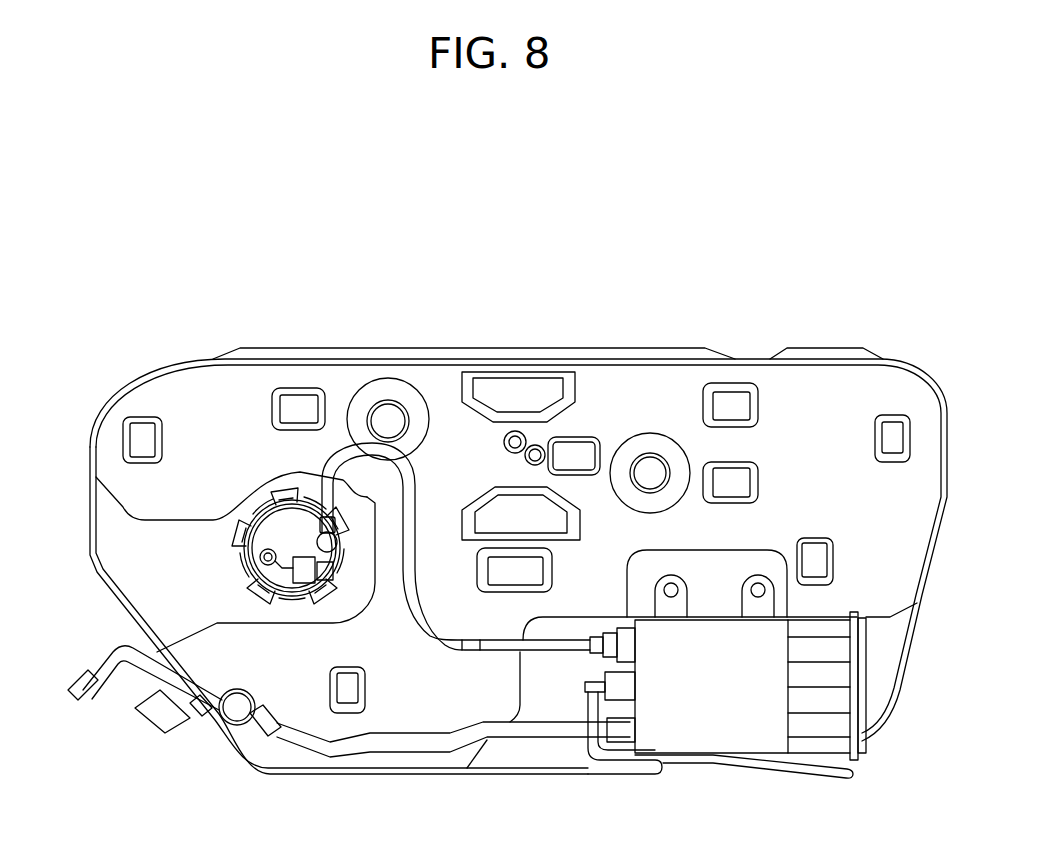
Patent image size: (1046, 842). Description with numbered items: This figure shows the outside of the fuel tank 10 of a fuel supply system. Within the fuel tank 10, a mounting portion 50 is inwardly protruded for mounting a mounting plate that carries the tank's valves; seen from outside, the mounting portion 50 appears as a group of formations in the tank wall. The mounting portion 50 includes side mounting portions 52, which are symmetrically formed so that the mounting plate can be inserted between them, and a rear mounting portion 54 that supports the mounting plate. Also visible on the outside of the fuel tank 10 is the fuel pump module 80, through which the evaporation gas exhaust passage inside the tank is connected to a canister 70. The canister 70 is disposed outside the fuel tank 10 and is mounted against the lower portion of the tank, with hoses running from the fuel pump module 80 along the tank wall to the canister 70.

The fuel tank 10 is at (767, 320).
The mounting portion 50 is at (593, 252).
The side mounting portions 52 is at (498, 510).
The rear mounting portion 54 is at (583, 450).
The canister 70 is at (715, 737).
The fuel pump module 80 is at (230, 592).